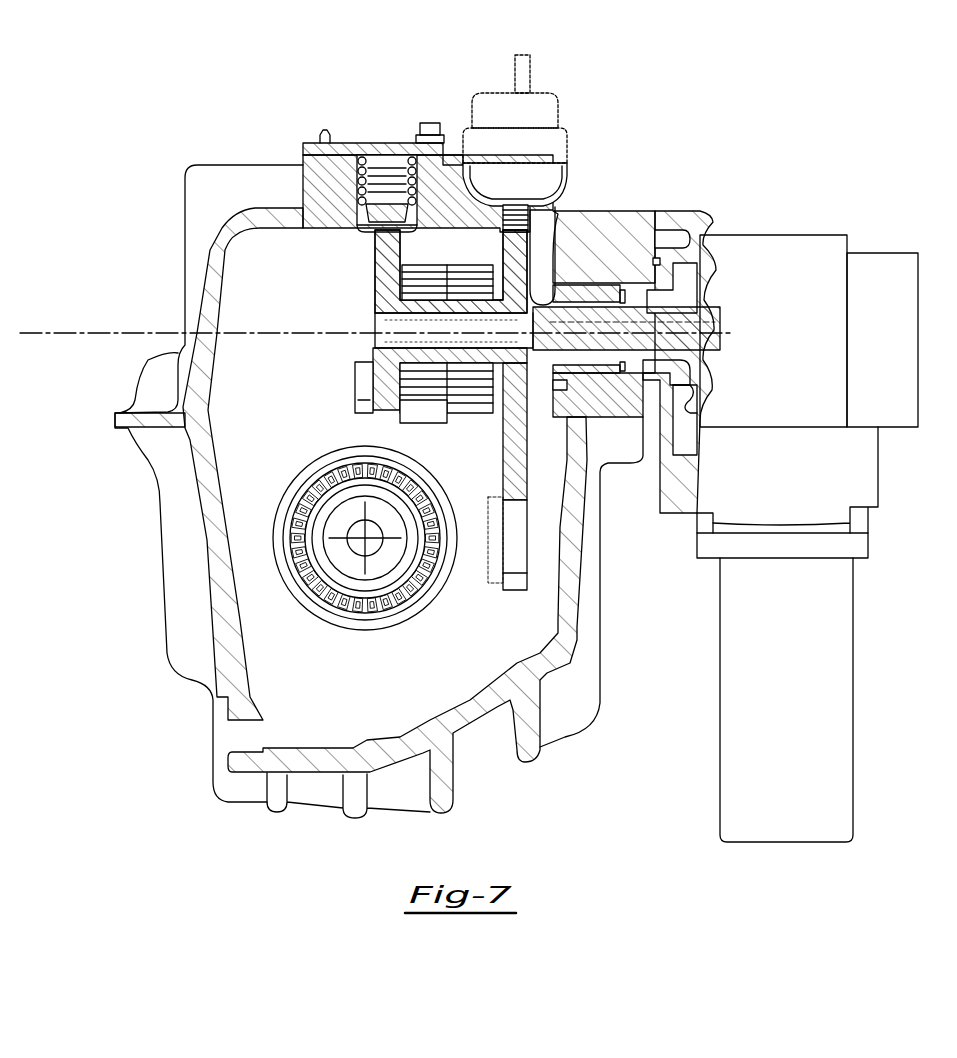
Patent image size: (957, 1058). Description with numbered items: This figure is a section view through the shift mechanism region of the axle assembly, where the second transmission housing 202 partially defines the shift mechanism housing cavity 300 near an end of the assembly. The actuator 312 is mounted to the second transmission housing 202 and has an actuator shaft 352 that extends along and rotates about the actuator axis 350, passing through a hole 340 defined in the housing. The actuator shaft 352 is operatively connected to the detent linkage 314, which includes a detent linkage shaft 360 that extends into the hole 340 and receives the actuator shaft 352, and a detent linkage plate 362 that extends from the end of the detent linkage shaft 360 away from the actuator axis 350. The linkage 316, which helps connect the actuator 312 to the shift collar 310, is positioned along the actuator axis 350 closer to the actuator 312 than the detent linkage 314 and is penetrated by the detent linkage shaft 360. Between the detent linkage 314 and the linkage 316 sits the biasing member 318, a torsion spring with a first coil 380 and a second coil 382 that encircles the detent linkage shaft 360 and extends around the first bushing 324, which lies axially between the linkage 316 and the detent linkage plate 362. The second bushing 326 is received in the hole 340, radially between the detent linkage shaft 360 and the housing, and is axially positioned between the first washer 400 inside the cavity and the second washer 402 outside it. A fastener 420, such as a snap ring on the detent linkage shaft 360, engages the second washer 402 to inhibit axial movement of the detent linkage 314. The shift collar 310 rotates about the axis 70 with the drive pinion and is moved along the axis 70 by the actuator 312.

The axis 70 is at (363, 537).
The second transmission housing 202 is at (642, 212).
The shift mechanism housing cavity 300 is at (316, 310).
The shift collar 310 is at (345, 448).
The actuator 312 is at (896, 343).
The detent linkage 314 is at (377, 258).
The linkage 316 is at (517, 593).
The biasing member 318 is at (470, 256).
The first bushing 324 is at (372, 345).
The second bushing 326 is at (590, 418).
The hole 340 is at (596, 357).
The actuator axis 350 is at (124, 332).
The actuator shaft 352 is at (583, 323).
The detent linkage shaft 360 is at (530, 388).
The detent linkage plate 362 is at (451, 271).
The first coil 380 is at (473, 414).
The second coil 382 is at (423, 425).
The first washer 400 is at (388, 157).
The second washer 402 is at (613, 285).
The fastener 420 is at (622, 290).